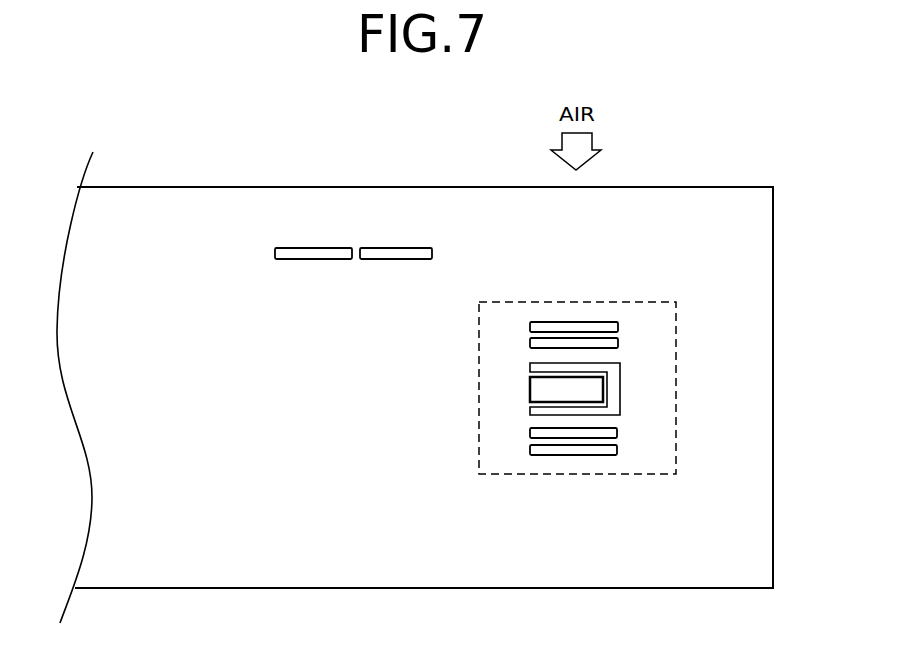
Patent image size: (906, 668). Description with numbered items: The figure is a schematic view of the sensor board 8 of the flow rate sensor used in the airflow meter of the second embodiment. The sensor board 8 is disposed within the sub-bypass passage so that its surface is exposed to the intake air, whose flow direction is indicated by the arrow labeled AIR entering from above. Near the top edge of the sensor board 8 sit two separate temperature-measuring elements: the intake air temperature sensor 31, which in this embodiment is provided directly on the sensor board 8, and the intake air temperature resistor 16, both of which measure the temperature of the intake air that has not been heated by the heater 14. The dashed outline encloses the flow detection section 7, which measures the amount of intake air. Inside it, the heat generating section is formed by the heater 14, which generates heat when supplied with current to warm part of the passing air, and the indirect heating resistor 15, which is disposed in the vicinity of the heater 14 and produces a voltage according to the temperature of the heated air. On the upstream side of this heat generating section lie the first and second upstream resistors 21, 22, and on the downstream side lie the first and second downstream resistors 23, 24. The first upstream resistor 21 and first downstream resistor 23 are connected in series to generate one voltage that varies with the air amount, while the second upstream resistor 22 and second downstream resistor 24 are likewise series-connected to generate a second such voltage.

The flow detection section 7 is at (578, 302).
The sensor board 8 is at (485, 187).
The heater 14 is at (530, 390).
The indirect heating resistor 15 is at (530, 408).
The intake air temperature resistor 16 is at (398, 248).
The first upstream resistor 21 is at (618, 328).
The second upstream resistor 22 is at (618, 343).
The first downstream resistor 23 is at (618, 433).
The second downstream resistor 24 is at (618, 448).
The intake air temperature sensor 31 is at (320, 248).